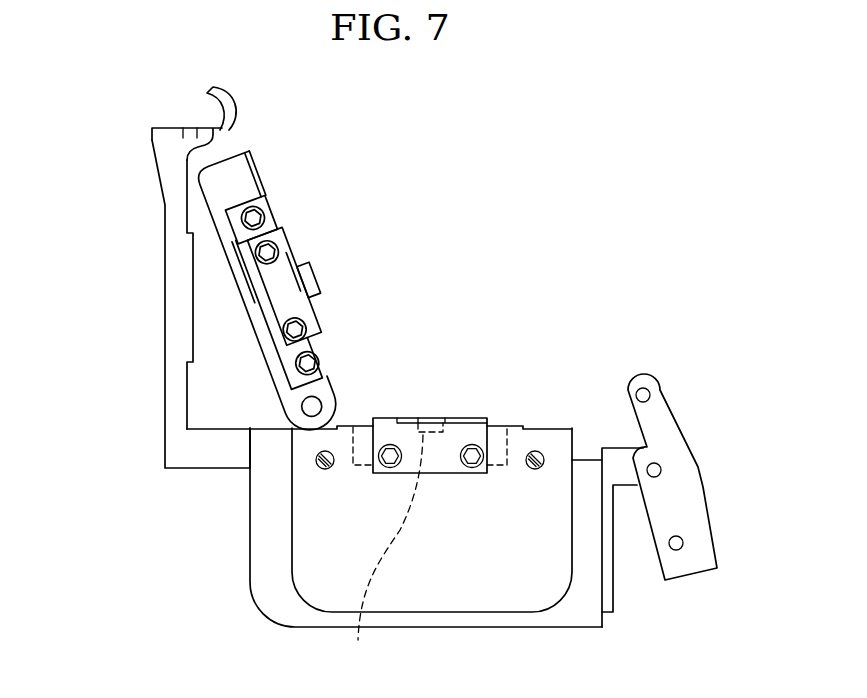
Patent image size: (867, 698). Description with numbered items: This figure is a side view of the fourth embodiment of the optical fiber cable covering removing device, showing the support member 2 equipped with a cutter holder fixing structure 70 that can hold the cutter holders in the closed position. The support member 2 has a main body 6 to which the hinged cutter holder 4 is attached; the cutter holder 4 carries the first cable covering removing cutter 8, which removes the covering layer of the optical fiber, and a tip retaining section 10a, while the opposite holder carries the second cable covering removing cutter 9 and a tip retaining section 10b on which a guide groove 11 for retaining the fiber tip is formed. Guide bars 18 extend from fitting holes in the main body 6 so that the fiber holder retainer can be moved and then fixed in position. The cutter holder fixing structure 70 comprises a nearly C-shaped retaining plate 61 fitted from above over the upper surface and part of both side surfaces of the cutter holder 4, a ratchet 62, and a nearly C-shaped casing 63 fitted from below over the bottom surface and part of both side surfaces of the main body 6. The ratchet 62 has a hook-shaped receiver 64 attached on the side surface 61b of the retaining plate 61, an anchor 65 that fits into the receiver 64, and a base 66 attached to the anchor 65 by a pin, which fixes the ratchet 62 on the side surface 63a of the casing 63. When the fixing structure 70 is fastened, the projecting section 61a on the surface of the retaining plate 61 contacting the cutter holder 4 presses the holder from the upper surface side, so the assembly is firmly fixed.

The support member 2 is at (283, 549).
The cutter holder 4 is at (263, 352).
The main body 6 is at (458, 582).
The first cable covering removing cutter 8 is at (297, 256).
The second cable covering removing cutter 9 is at (466, 418).
The tip retaining section 10a is at (322, 282).
The tip retaining section 10b is at (507, 438).
The guide groove 11 is at (384, 558).
The guide bar 18 is at (318, 464).
The retaining plate 61 is at (167, 262).
The projecting section 61a is at (195, 298).
The side surface of retaining plate 61b is at (186, 127).
The ratchet 62 is at (149, 123).
The casing 63 is at (578, 622).
The side surface of casing 63a is at (604, 590).
The hook-shaped receiver 64 is at (200, 129).
The anchor 65 is at (705, 487).
The base 66 is at (538, 470).
The cutter holder fixing structure 70 is at (180, 260).